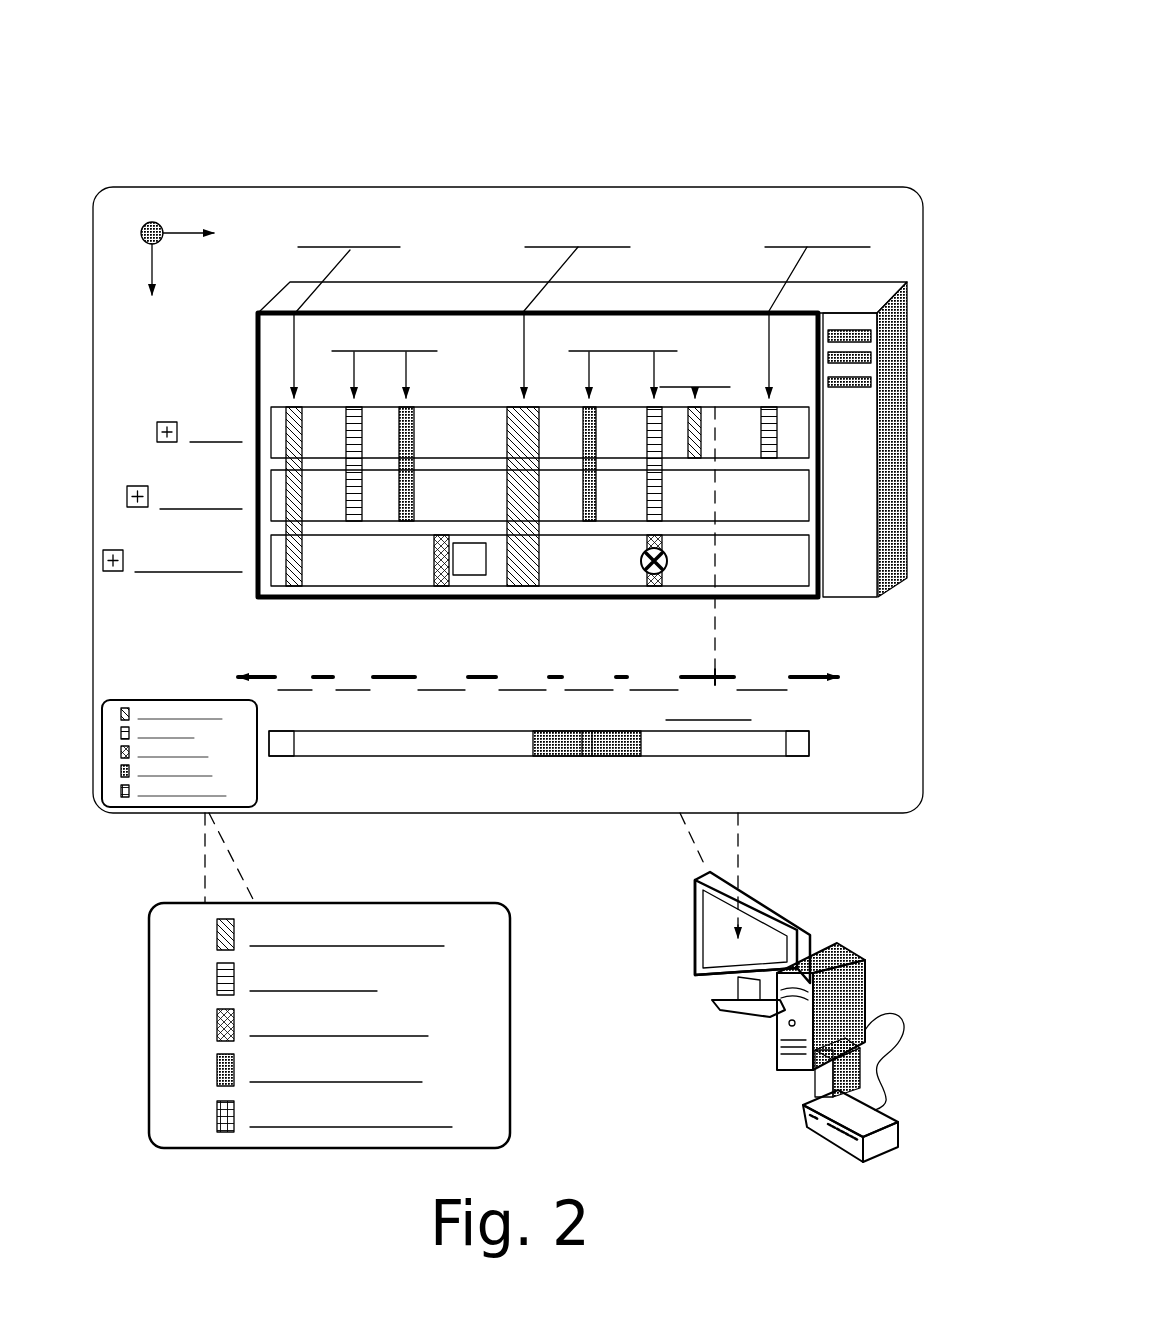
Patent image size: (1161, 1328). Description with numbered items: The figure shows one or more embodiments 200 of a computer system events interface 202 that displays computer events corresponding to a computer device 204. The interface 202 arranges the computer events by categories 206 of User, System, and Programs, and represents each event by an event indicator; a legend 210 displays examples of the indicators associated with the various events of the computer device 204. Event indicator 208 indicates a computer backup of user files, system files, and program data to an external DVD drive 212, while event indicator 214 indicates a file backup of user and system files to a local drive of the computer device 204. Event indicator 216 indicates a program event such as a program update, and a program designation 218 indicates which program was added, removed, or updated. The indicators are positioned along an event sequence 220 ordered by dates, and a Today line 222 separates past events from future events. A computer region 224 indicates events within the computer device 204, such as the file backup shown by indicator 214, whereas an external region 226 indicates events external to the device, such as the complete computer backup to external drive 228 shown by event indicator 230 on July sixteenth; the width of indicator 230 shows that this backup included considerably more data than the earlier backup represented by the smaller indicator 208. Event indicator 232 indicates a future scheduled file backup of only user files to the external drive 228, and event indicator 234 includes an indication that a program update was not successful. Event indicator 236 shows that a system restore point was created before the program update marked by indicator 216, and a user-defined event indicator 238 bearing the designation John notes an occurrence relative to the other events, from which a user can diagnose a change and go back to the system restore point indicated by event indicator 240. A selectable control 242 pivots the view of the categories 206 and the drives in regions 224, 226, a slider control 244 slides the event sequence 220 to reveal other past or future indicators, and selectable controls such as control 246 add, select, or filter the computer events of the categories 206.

The embodiment of a computer system events interface 200 is at (740, 72).
The computer system events interface 202 is at (564, 187).
The computer device 204 is at (843, 920).
The categories 206 is at (171, 491).
The event indicator 208 is at (533, 397).
The legend 210 is at (380, 903).
The external DVD drive 212 is at (820, 1072).
The event indicator 214 is at (345, 430).
The event indicator 216 is at (434, 570).
The program designation 218 is at (470, 578).
The event sequence 220 is at (796, 687).
The Today line 222 is at (718, 565).
The computer region 224 is at (458, 340).
The external region 226 is at (688, 212).
The external drive 228 is at (848, 1145).
The event indicator 230 is at (504, 583).
The event indicator 232 is at (760, 412).
The event indicator 234 is at (654, 576).
The event indicator 236 is at (407, 430).
The event indicator 238 is at (697, 450).
The event indicator 240 is at (598, 432).
The selectable control 242 is at (160, 224).
The slider control 244 is at (617, 748).
The selectable control 246 is at (113, 572).